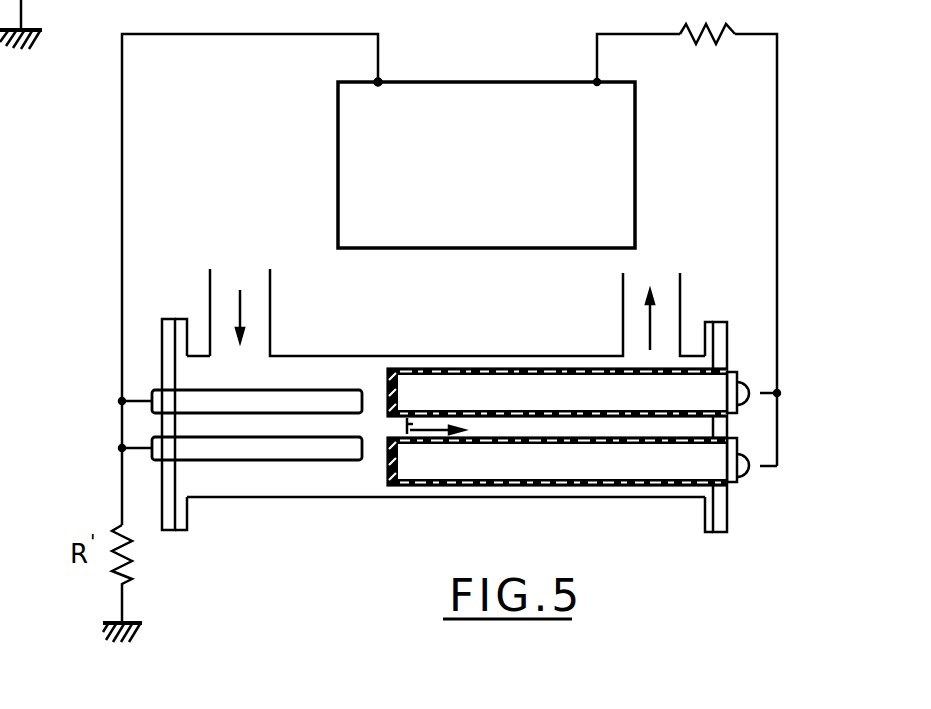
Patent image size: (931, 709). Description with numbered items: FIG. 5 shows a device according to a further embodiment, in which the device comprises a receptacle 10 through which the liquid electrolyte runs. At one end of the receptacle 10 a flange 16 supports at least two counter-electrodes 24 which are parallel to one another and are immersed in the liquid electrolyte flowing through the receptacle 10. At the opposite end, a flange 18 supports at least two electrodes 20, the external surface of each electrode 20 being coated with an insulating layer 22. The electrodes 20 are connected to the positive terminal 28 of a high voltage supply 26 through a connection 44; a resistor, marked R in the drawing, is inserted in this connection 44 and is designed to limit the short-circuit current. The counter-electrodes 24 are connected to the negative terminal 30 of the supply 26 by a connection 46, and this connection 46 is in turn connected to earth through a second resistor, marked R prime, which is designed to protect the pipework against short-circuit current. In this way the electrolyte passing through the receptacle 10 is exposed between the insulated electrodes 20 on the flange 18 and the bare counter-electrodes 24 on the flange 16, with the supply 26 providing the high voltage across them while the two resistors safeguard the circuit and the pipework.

The receptacle 10 is at (425, 499).
The flange 16 is at (163, 531).
The flange 18 is at (727, 533).
The electrodes 20 is at (435, 377).
The insulating layer 22 is at (520, 368).
The counter-electrodes 24 is at (301, 397).
The high voltage supply 26 is at (635, 172).
The positive terminal 28 is at (597, 80).
The negative terminal 30 is at (392, 72).
The connection 44 is at (777, 277).
The connection 46 is at (121, 250).